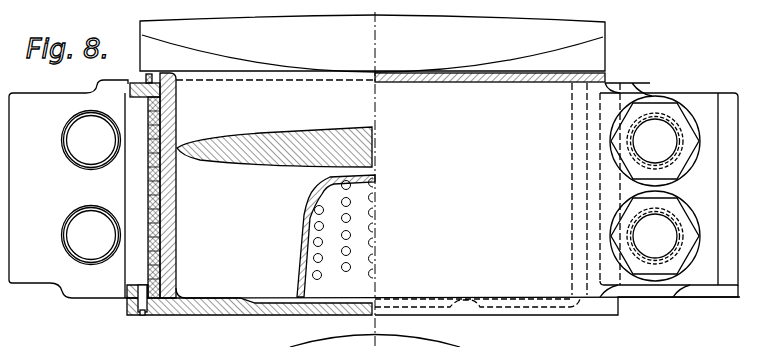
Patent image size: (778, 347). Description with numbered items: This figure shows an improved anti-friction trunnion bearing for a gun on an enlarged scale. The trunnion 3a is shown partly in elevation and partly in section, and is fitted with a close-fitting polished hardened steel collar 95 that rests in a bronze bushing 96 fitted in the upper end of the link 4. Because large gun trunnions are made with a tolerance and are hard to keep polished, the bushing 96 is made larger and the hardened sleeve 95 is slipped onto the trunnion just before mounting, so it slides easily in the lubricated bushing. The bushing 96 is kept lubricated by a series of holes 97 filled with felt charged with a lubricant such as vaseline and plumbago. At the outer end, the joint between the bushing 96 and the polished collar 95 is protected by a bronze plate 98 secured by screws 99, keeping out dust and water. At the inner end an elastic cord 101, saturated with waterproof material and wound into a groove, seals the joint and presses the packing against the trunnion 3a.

The trunnion 3a is at (372, 91).
The link 4 is at (68, 189).
The hardened steel collar 95 is at (178, 243).
The bronze bushing 96 is at (140, 82).
The holes 97 is at (162, 190).
The bronze plate 98 is at (236, 314).
The screws 99 is at (140, 316).
The cord 101 is at (606, 82).